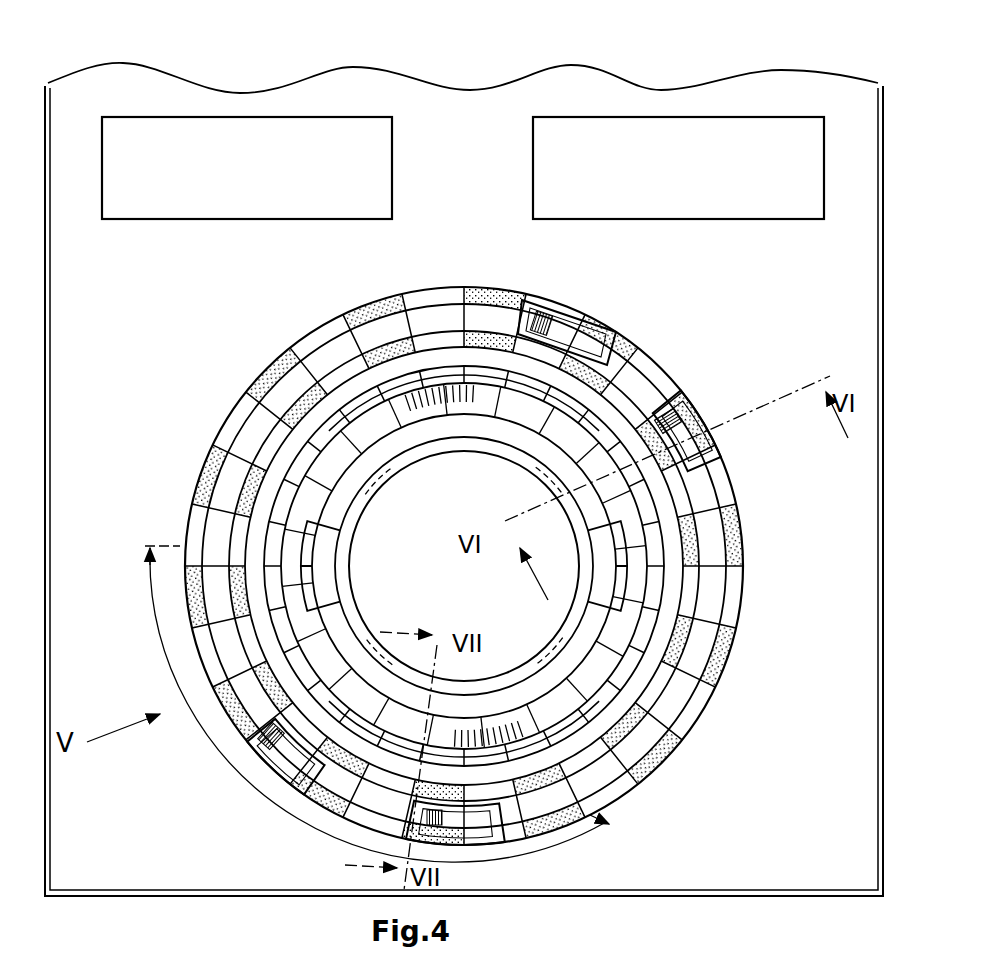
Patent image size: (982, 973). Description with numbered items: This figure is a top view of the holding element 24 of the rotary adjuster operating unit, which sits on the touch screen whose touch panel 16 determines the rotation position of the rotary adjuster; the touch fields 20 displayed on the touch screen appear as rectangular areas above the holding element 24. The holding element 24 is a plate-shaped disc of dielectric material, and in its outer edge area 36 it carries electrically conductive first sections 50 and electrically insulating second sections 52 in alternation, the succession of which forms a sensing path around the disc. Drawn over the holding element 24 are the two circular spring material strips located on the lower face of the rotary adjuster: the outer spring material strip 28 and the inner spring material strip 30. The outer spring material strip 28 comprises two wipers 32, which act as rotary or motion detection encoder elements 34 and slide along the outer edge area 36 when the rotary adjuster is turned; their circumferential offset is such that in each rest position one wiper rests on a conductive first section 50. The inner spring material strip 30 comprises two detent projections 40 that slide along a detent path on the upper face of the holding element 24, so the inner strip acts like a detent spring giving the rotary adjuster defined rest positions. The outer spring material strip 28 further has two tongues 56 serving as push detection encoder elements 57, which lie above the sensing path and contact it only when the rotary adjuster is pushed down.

The touch panel 16 is at (460, 232).
The touch fields 20 is at (305, 98).
The holding element 24 is at (688, 358).
The outer spring material strip 28 is at (250, 441).
The inner spring material strip 30 is at (312, 492).
The wipers 32 is at (605, 325).
The rotary or motion detection encoder elements 34 is at (580, 300).
The outer edge area 36 is at (724, 742).
The detent projections 40 is at (440, 384).
The electrically conductive first sections 50 is at (268, 372).
The electrically insulating second sections 52 is at (352, 340).
The tongues 56 is at (700, 440).
The push detection encoder elements 57 is at (714, 398).